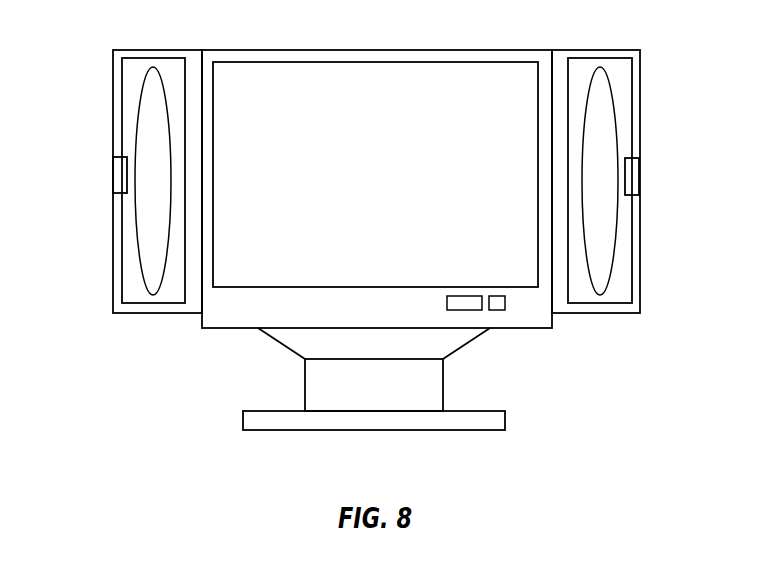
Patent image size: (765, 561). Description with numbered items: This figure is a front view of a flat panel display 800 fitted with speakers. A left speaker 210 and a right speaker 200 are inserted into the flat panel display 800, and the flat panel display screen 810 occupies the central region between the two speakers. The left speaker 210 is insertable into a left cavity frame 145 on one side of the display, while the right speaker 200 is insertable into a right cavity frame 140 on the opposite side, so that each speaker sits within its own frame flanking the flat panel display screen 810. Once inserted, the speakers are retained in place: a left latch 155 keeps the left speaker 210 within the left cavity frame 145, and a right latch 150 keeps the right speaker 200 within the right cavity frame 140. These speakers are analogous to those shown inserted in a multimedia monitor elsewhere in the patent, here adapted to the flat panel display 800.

The flat panel display 800 is at (138, 405).
The flat panel display screen 810 is at (397, 190).
The right cavity frame 140 is at (600, 53).
The left cavity frame 145 is at (155, 53).
The right latch 150 is at (630, 183).
The left latch 155 is at (120, 183).
The right speaker 200 is at (617, 292).
The left speaker 210 is at (138, 292).